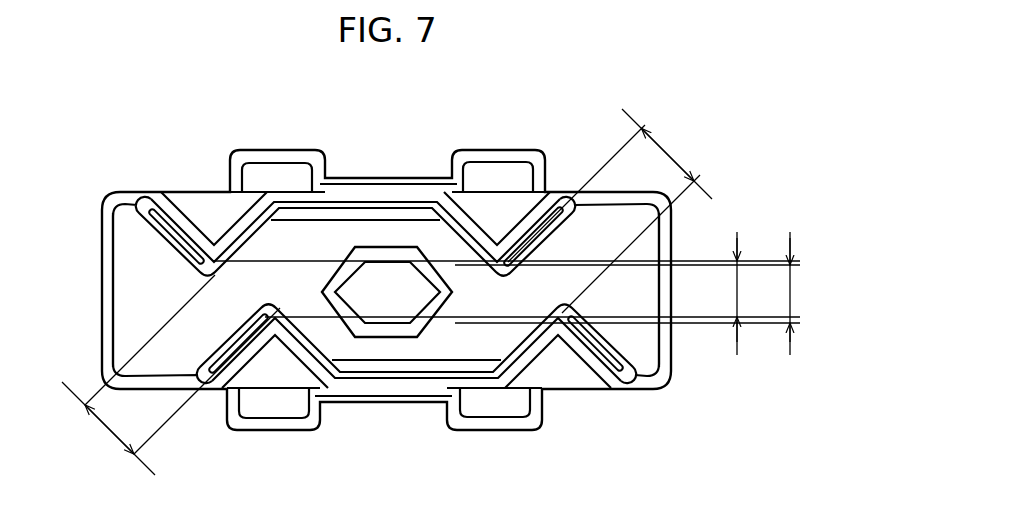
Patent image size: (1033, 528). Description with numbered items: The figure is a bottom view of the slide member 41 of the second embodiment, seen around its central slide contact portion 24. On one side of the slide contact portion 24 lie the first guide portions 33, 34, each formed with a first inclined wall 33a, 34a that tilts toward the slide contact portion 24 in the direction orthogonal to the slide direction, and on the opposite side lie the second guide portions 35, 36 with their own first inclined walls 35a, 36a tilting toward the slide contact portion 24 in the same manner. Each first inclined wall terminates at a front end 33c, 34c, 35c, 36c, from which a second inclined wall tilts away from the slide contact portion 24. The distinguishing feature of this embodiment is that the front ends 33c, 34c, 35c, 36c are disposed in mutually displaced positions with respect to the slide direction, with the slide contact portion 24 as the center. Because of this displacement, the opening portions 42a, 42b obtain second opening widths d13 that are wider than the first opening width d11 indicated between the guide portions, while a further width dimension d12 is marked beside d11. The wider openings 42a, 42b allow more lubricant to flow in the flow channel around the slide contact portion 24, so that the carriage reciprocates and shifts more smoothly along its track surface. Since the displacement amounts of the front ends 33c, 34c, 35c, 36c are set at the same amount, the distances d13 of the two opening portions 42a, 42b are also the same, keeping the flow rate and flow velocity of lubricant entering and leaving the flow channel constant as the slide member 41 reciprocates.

The slide contact portion 24 is at (388, 310).
The first guide portion 33 is at (212, 236).
The first inclined wall 33a is at (258, 204).
The front end 33c is at (208, 266).
The first guide portion 34 is at (511, 228).
The first inclined wall 34a is at (480, 215).
The front end 34c is at (517, 272).
The second guide portion 35 is at (285, 360).
The first inclined wall 35a is at (298, 362).
The front end 35c is at (264, 285).
The second guide portion 36 is at (549, 356).
The first inclined wall 36a is at (512, 397).
The front end 36c is at (597, 313).
The slide member 41 is at (594, 110).
The opening portion 42a is at (212, 300).
The opening portion 42b is at (533, 290).
The first opening width d11 is at (507, 293).
The dimension d12 is at (627, 293).
The second opening width d13 is at (387, 292).